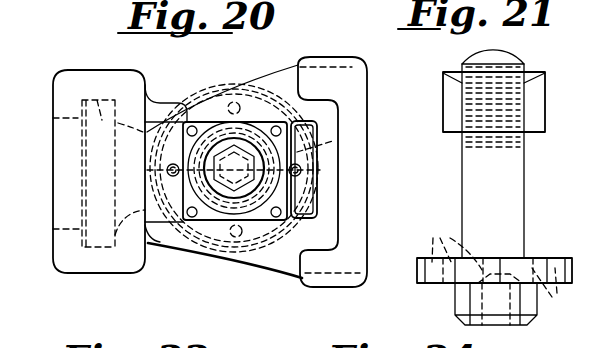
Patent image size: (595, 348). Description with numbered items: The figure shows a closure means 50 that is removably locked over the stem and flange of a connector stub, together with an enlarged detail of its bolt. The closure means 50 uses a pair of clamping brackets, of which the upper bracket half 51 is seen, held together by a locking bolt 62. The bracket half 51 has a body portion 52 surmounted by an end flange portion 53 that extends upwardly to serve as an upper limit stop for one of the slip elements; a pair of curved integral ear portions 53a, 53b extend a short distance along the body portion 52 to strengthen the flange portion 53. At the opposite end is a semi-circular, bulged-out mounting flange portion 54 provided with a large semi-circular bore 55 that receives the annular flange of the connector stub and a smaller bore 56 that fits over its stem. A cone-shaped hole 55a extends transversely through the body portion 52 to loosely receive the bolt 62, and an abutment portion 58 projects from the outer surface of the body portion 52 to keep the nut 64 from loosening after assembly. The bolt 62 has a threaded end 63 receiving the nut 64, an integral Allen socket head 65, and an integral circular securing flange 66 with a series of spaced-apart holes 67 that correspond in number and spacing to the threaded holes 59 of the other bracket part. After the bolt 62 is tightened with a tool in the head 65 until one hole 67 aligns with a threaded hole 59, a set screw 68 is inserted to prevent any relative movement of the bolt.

In FIG. 20, the closure means 50 is at (95, 68).
In FIG. 20, the upper bracket half 51 is at (193, 97).
In FIG. 20, the body portion 52 is at (327, 130).
In FIG. 20, the end flange portion 53 is at (366, 168).
In FIG. 20, the curved integral ear portion 53a is at (307, 56).
In FIG. 20, the curved integral ear portion 53b is at (316, 282).
In FIG. 20, the mounting or connecting flange portion 54 is at (125, 69).
In FIG. 20, the semi-circular bore 55 is at (98, 173).
In FIG. 20, the hole 55a is at (276, 100).
In FIG. 20, the smaller bore 56 is at (70, 123).
In FIG. 20, the abutment portion 58 is at (304, 187).
In FIG. 20, the setscrew-receiving threaded holes 59 is at (228, 109).
In FIG. 20, the locking bolt 62 is at (243, 140).
In FIG. 21, the locking bolt 62 is at (525, 178).
In FIG. 21, the threaded end 63 is at (463, 62).
In FIG. 20, the nut 64 is at (250, 135).
In FIG. 21, the nut 64 is at (540, 97).
In FIG. 20, the Allen head 65 is at (335, 141).
In FIG. 21, the Allen head 65 is at (456, 302).
In FIG. 20, the securing flange 66 is at (267, 252).
In FIG. 21, the securing flange 66 is at (572, 258).
In FIG. 21, the holes 67 is at (499, 268).
In FIG. 20, the set screw 68 is at (150, 172).